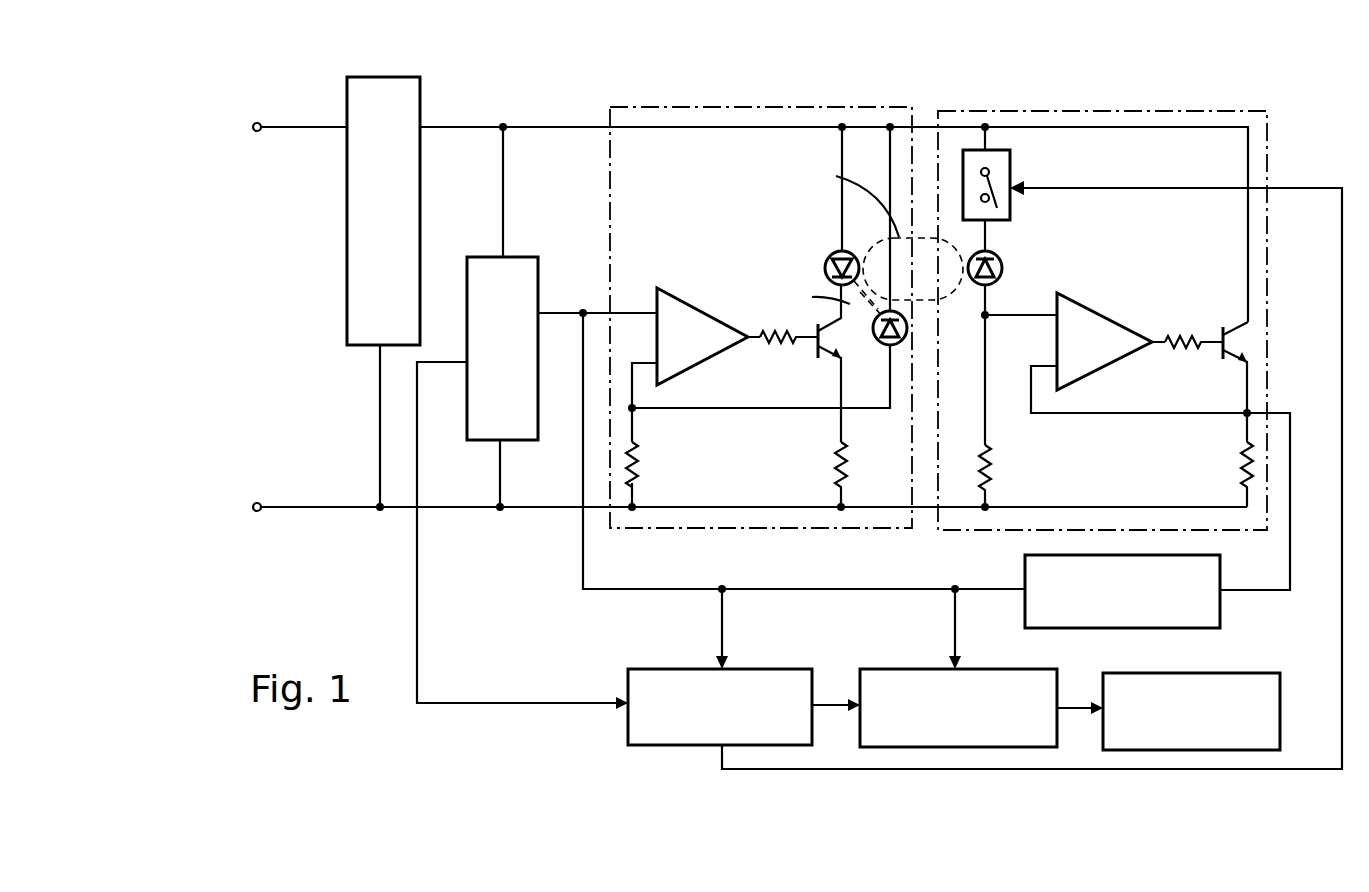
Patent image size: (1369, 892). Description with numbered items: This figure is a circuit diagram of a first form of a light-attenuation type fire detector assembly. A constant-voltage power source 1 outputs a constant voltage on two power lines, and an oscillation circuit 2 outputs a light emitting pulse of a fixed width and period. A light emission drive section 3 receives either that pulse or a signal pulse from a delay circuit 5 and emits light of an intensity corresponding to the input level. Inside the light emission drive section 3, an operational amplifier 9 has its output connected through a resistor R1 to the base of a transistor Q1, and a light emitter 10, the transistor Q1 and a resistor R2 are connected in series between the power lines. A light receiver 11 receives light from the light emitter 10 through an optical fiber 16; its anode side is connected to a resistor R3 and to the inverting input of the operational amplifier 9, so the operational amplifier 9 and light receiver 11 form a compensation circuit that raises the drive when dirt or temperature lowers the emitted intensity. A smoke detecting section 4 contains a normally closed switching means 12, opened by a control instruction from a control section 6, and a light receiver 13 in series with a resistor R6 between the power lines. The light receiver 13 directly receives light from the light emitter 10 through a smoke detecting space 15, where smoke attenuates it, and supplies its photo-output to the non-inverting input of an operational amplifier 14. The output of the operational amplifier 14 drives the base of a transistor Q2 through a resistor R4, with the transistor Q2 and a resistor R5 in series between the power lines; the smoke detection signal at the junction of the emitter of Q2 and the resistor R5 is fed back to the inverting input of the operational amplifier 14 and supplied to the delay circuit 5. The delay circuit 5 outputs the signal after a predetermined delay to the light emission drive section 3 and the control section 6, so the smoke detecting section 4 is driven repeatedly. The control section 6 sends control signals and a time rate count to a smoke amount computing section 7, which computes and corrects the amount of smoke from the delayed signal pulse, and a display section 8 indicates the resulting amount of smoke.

The constant-voltage power source 1 is at (420, 97).
The oscillation circuit 2 is at (520, 257).
The light emission drive section 3 is at (610, 107).
The smoke detecting section 4 is at (963, 108).
The delay circuit 5 is at (1025, 566).
The control section 6 is at (766, 669).
The smoke amount computing section 7 is at (988, 669).
The display section 8 is at (1252, 673).
The operational amplifier 9 is at (696, 306).
The light emitter 10 is at (828, 262).
The light receiver 11 is at (883, 352).
The switching means 12 is at (1010, 172).
The light receiver 13 is at (1002, 264).
The operational amplifier 14 is at (1100, 305).
The smoke detecting space 15 is at (882, 246).
The optical fiber 16 is at (806, 307).
The resistor R1 is at (789, 324).
The resistor R2 is at (821, 434).
The resistor R3 is at (649, 464).
The resistor R4 is at (1194, 328).
The resistor R5 is at (1224, 474).
The resistor R6 is at (1001, 478).
The transistor Q1 is at (820, 334).
The transistor Q2 is at (1224, 382).